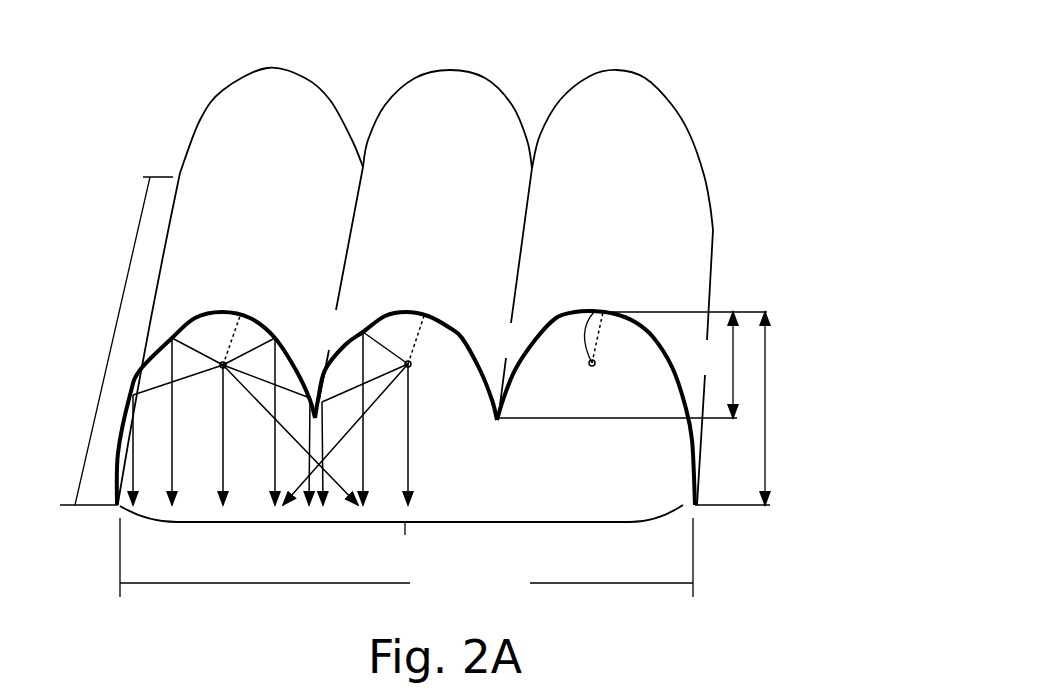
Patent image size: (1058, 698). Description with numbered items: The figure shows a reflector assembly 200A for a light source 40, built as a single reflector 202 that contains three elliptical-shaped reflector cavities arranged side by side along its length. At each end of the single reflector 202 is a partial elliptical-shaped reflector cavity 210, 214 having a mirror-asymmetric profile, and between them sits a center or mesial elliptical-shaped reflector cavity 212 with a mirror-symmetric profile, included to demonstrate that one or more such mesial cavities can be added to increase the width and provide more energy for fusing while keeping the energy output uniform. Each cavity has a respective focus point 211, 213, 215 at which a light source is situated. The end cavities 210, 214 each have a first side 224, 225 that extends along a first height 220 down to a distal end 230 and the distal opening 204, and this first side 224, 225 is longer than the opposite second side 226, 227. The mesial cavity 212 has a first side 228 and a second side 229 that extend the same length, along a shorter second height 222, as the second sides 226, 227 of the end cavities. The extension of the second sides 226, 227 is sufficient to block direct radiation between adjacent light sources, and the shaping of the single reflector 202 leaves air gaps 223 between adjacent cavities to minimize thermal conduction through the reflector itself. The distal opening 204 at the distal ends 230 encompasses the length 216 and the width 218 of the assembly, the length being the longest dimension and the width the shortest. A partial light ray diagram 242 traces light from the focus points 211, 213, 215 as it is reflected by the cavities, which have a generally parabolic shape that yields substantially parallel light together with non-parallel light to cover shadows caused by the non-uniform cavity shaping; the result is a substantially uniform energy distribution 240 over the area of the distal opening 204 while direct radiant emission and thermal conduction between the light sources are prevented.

The light source 40 is at (649, 61).
The reflector assembly 200A is at (757, 103).
The single reflector 202 is at (687, 176).
The distal opening 204 is at (527, 506).
The partial elliptical-shaped reflector cavity 210 is at (279, 307).
The focus point 211 is at (223, 365).
The elliptical-shaped reflector cavity 212 is at (458, 333).
The focus point 213 is at (408, 364).
The partial elliptical-shaped reflector cavity 214 is at (654, 339).
The focus point 215 is at (555, 317).
The length 216 is at (113, 368).
The width 218 is at (527, 594).
The first height 220 is at (767, 398).
The second height 222 is at (737, 338).
The air gaps 223 is at (366, 164).
The first side 224 is at (121, 424).
The first side 225 is at (672, 369).
The second side 226 is at (294, 334).
The second side 227 is at (526, 286).
The first side 228 is at (386, 311).
The second side 229 is at (472, 353).
The distal ends 230 is at (117, 503).
The uniform energy distribution 240 is at (406, 539).
The partial light ray diagram 242 is at (432, 460).